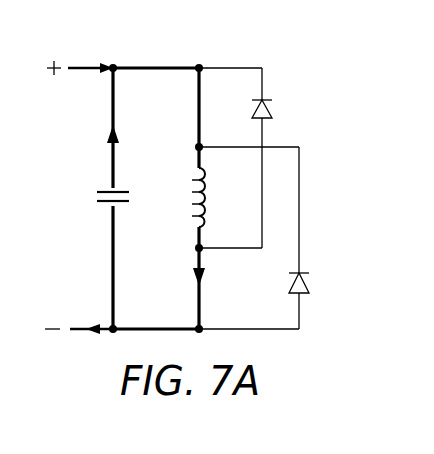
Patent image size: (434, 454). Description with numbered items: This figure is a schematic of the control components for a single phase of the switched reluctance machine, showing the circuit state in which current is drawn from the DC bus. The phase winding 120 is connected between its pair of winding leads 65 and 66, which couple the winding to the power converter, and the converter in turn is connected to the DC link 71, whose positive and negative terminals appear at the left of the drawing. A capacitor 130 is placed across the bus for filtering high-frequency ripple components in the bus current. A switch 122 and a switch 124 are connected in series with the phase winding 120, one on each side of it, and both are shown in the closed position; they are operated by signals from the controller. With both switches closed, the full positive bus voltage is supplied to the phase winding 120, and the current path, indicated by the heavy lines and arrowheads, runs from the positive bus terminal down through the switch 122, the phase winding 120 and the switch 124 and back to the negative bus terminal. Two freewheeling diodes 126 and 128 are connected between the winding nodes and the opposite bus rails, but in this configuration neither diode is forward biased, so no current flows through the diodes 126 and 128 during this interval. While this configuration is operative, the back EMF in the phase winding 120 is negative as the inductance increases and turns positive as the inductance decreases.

The DC link 71 is at (78, 66).
The winding lead 65 is at (195, 162).
The winding lead 66 is at (195, 234).
The phase winding 120 is at (205, 212).
The switch 122 is at (200, 130).
The switch 124 is at (201, 302).
The diode 126 is at (272, 108).
The diode 128 is at (310, 283).
The capacitor 130 is at (96, 198).